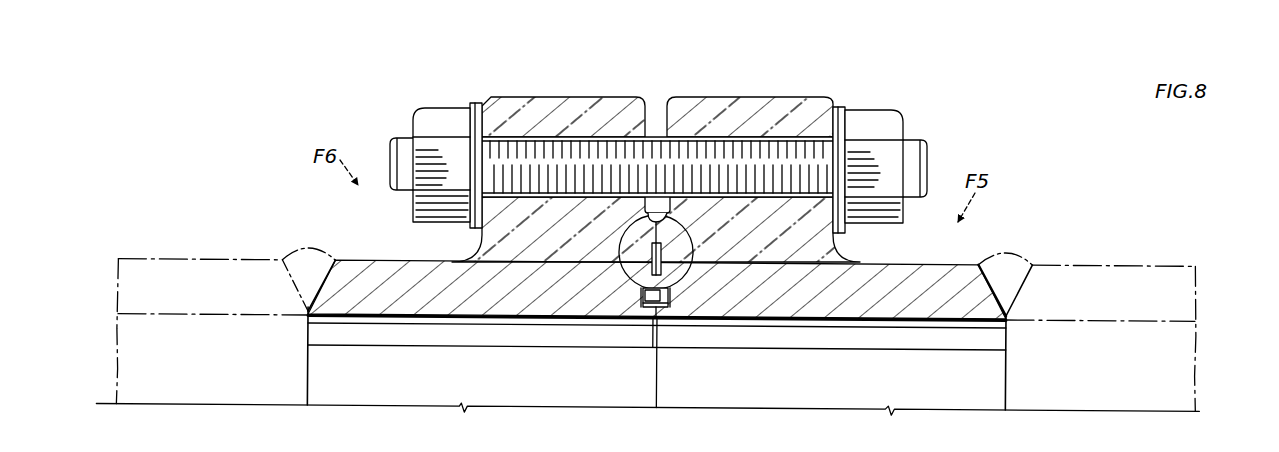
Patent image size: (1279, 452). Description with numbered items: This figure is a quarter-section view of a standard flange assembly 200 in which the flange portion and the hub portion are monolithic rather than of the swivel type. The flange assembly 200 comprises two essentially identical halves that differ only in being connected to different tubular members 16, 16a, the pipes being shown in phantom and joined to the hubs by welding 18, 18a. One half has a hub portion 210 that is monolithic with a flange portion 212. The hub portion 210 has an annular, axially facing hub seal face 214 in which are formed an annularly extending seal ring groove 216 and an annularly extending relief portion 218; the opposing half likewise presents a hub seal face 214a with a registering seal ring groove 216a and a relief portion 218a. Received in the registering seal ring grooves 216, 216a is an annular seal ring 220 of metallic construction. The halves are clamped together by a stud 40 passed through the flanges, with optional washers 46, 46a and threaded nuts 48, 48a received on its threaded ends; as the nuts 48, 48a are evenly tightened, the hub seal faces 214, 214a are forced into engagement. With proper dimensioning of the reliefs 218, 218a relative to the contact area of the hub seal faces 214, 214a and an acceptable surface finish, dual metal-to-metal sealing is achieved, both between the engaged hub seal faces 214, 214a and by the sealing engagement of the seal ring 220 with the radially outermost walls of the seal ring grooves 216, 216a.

The tubular member 16 is at (1133, 270).
The tubular member 16a is at (172, 268).
The welding 18 is at (1010, 265).
The welding 18a is at (304, 258).
The stud 40 is at (510, 147).
The washer 46 is at (838, 110).
The washer 46a is at (472, 103).
The threaded nut 48 is at (890, 120).
The threaded nut 48a is at (432, 118).
The flange assembly 200 is at (990, 93).
The hub portion 210 is at (877, 303).
The flange portion 212 is at (730, 108).
The hub seal face 214 is at (657, 320).
The hub seal face 214a is at (680, 200).
The seal ring groove 216 is at (670, 300).
The seal ring groove 216a is at (643, 288).
The relief portion 218 is at (668, 258).
The relief portion 218a is at (648, 265).
The seal ring 220 is at (648, 308).